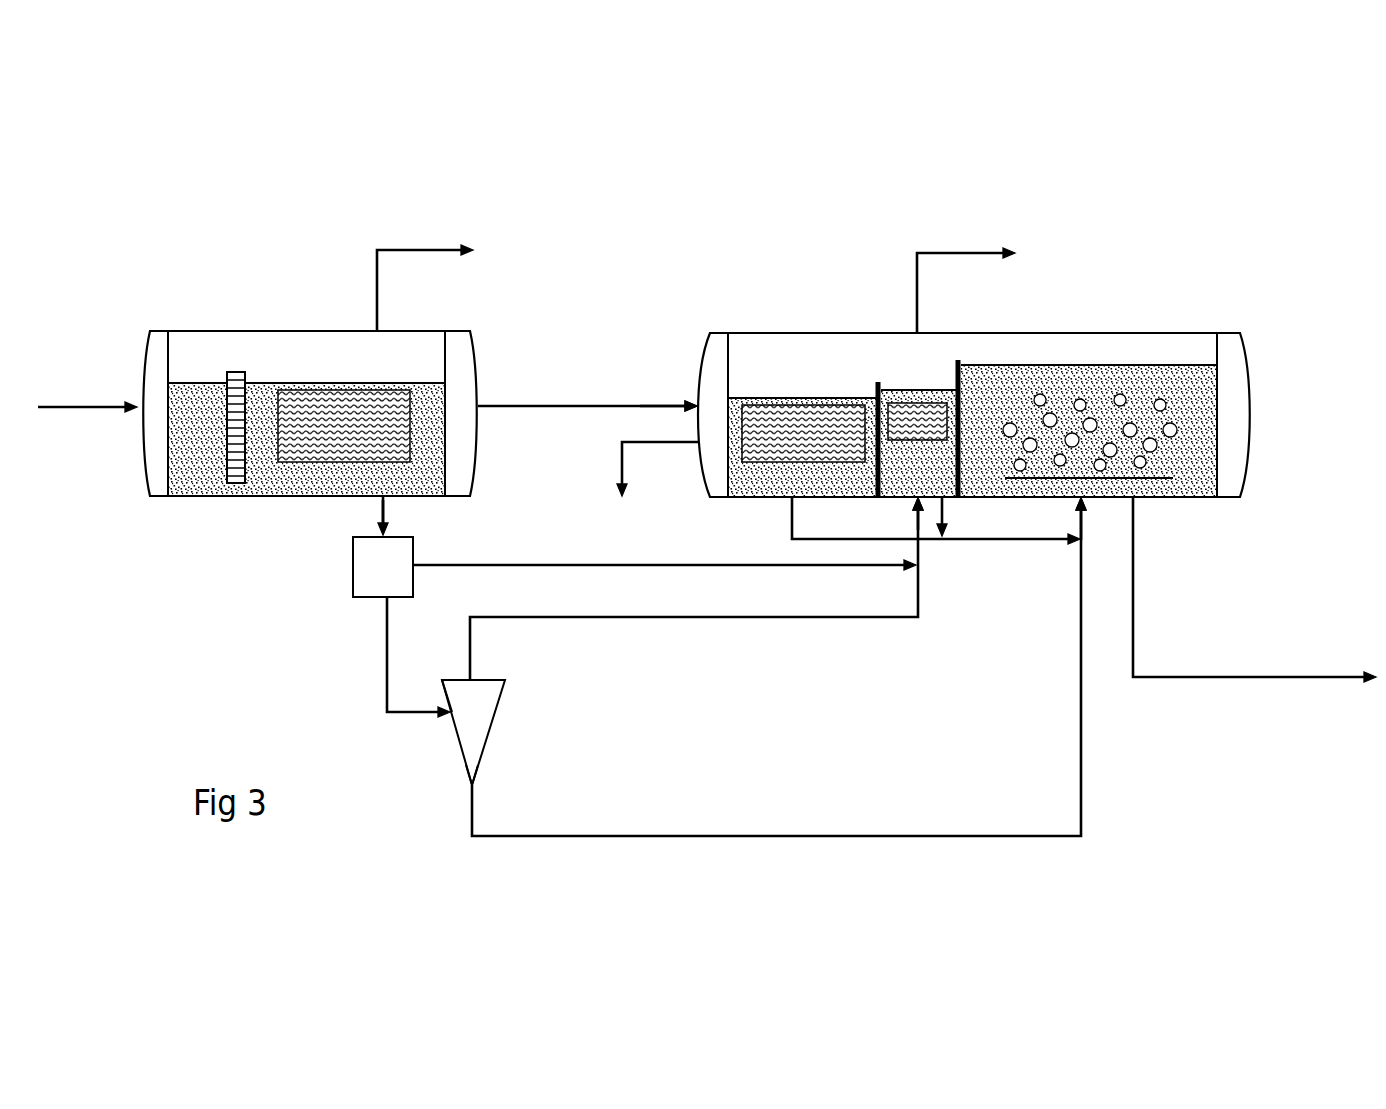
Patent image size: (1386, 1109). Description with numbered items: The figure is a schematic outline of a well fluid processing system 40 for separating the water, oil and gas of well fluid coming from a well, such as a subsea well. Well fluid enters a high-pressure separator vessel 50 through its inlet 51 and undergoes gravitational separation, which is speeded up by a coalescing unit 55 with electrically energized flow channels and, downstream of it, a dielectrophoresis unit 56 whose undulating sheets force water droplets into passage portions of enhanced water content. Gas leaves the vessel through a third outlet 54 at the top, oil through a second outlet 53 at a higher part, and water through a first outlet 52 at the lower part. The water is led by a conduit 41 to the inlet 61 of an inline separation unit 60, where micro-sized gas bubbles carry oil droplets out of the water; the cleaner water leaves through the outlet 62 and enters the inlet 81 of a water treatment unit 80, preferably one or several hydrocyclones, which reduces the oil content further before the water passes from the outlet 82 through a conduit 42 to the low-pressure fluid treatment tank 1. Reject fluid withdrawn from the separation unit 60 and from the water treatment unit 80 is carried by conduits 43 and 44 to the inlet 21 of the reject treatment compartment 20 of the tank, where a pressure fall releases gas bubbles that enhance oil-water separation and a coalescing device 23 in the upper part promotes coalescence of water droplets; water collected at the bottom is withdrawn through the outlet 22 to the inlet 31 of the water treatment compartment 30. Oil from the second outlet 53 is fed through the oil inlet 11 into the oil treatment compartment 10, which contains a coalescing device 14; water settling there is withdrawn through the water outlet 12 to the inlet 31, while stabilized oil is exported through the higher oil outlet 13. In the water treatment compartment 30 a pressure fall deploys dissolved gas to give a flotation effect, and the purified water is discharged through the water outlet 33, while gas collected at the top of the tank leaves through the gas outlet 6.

The fluid treatment tank 1 is at (1057, 287).
The gas outlet 6 is at (920, 331).
The oil treatment compartment 10 is at (798, 379).
The oil inlet 11 is at (693, 400).
The water outlet 12 is at (790, 503).
The oil outlet 13 is at (698, 450).
The coalescing device 14 is at (820, 400).
The reject treatment compartment 20 is at (899, 366).
The inlet 21 is at (910, 504).
The outlet 22 is at (948, 503).
The coalescing device 23 is at (927, 392).
The water treatment compartment 30 is at (1099, 356).
The inlet 31 is at (1084, 506).
The water outlet 33 is at (1137, 506).
The well fluid processing system 40 is at (678, 252).
The conduit 41 is at (380, 517).
The conduit 42 is at (755, 836).
The conduit 43 is at (540, 563).
The conduit 44 is at (668, 628).
The separator vessel 50 is at (306, 296).
The inlet 51 is at (135, 403).
The first outlet 52 is at (390, 500).
The second outlet 53 is at (498, 392).
The third outlet 54 is at (380, 328).
The coalescing unit 55 is at (237, 372).
The dielectrophoresis unit 56 is at (346, 398).
The inline separation unit 60 is at (355, 570).
The inlet 61 is at (348, 539).
The outlet 62 is at (383, 605).
The water treatment unit 80 is at (492, 736).
The inlet 81 is at (448, 722).
The outlet 82 is at (480, 781).